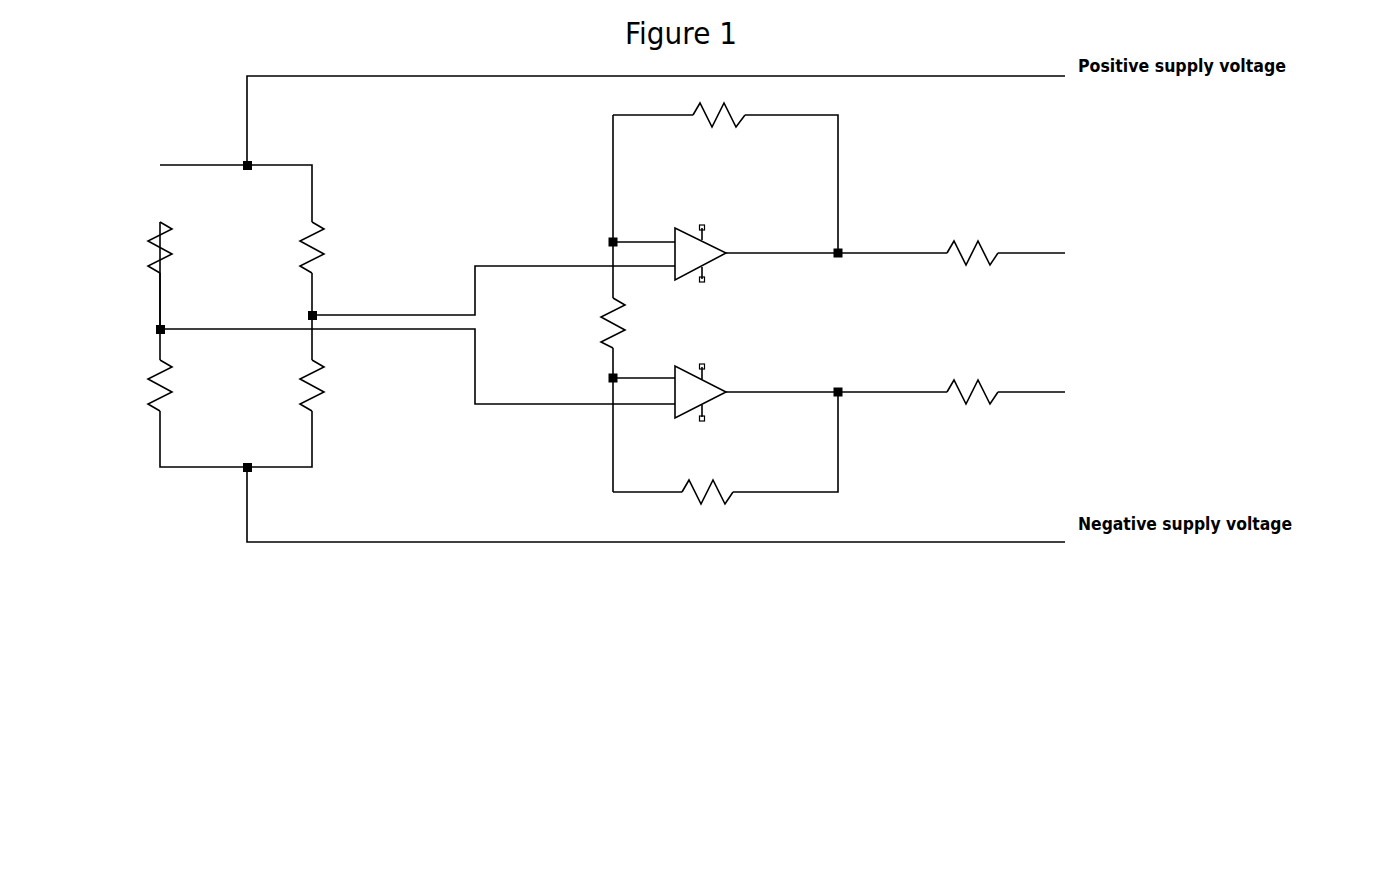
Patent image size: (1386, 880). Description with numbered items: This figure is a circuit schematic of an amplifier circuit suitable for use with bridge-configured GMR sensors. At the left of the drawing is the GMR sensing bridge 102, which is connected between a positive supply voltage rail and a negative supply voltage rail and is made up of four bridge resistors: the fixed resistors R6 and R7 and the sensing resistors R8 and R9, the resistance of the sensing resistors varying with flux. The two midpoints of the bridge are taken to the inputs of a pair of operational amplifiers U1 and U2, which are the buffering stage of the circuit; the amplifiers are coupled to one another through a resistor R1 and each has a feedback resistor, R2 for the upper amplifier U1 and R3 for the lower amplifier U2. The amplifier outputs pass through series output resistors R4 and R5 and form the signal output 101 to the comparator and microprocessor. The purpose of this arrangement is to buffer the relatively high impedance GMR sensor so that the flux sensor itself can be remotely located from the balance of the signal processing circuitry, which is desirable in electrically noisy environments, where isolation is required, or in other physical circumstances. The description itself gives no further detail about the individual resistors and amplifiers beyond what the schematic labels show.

The signal output 101 is at (1188, 278).
The GMR sensing bridge 102 is at (340, 326).
The resistor R1 5k R1 is at (625, 323).
The feedback resistor R2 5k R2 is at (719, 114).
The feedback resistor R3 5k R3 is at (707, 493).
The output resistor R4 50 ohm R4 is at (972, 252).
The output resistor R5 50 ohm R5 is at (972, 392).
The fixed resistor R6 of bridge R6 is at (195, 247).
The fixed resistor R7 of bridge R7 is at (347, 385).
The GMR sensor resistor R8 is at (356, 247).
The GMR sensor resistor R9 is at (204, 385).
The operational amplifier U1 LT1001A U1 is at (732, 252).
The operational amplifier U2 LT1001A U2 is at (732, 392).